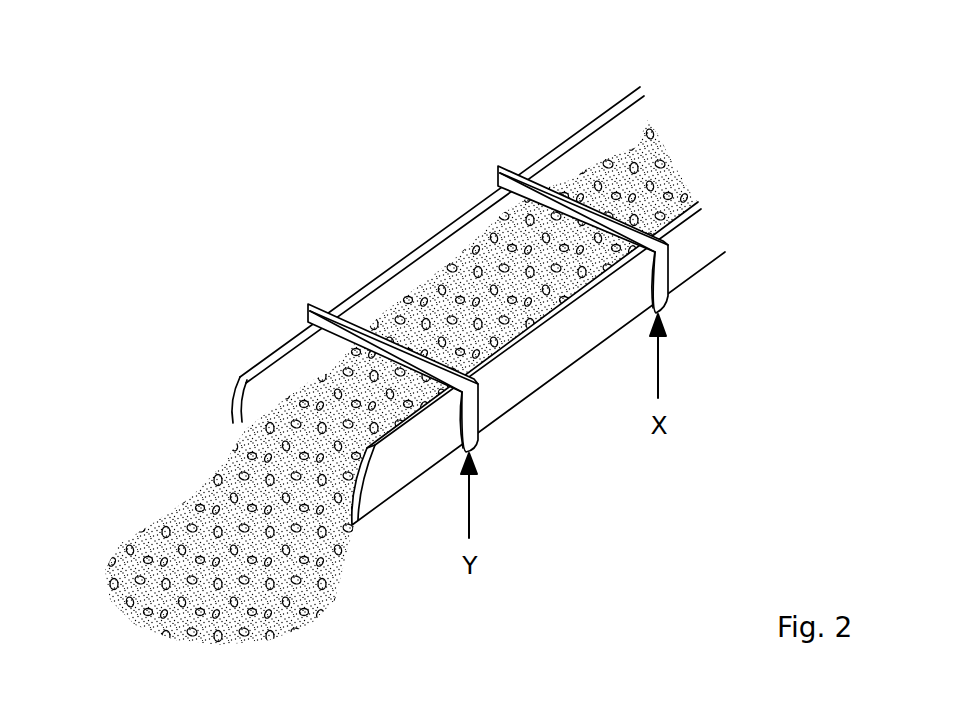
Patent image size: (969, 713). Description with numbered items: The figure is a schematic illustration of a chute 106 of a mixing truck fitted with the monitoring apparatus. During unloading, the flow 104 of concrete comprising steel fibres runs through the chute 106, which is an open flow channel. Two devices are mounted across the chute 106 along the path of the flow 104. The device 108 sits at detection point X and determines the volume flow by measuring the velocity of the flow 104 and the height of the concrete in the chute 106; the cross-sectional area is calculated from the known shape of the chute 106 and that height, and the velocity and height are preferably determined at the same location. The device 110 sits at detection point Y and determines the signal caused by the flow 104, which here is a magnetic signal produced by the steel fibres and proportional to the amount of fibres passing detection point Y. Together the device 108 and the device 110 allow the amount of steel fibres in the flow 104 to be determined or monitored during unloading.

The flow of concrete comprising steel fibres 104 is at (235, 485).
The chute 106 is at (420, 252).
The device 108 is at (512, 163).
The device 110 is at (325, 303).